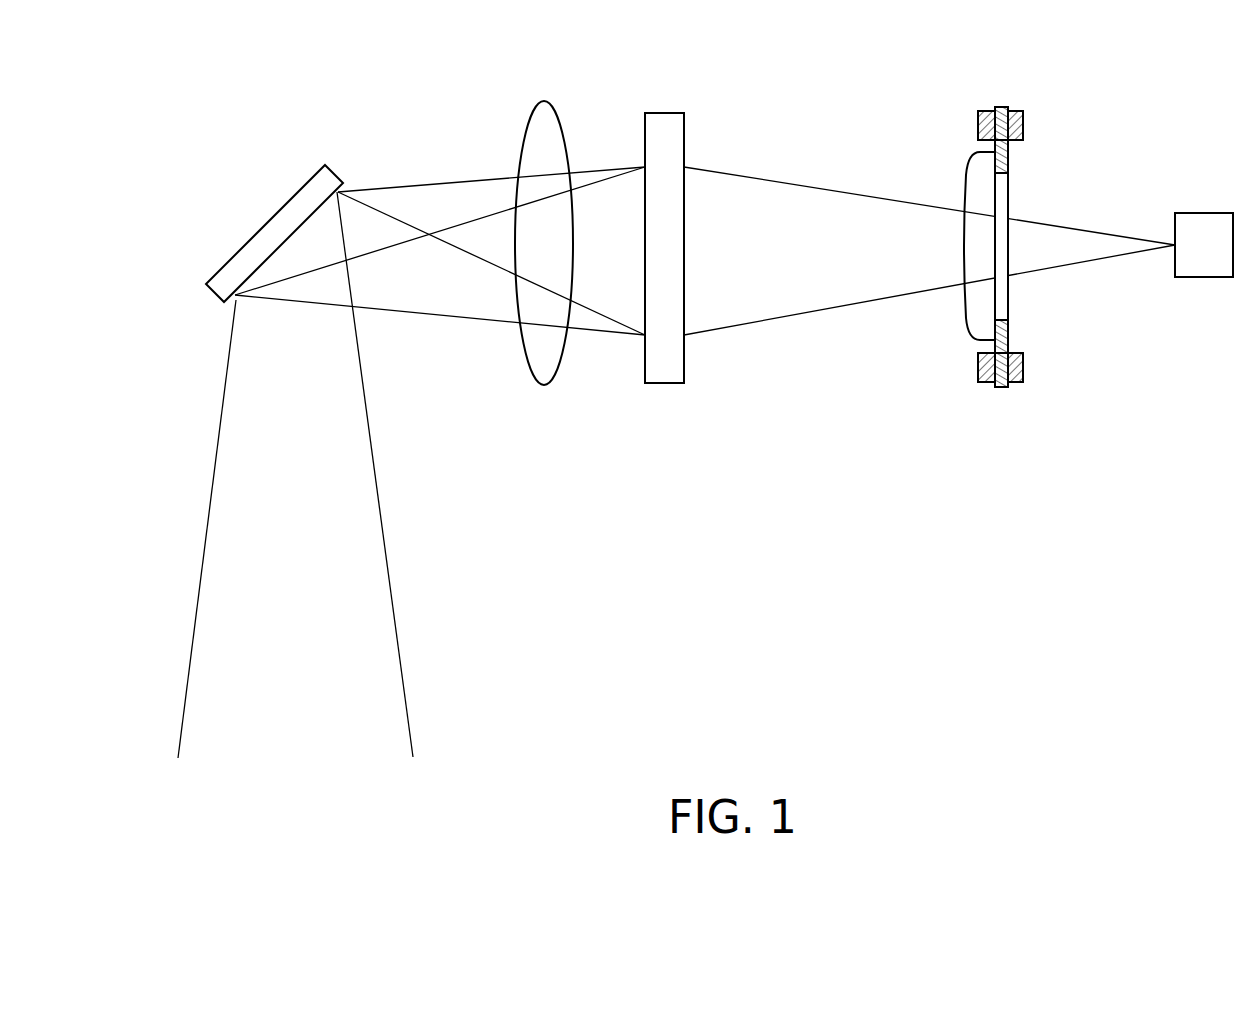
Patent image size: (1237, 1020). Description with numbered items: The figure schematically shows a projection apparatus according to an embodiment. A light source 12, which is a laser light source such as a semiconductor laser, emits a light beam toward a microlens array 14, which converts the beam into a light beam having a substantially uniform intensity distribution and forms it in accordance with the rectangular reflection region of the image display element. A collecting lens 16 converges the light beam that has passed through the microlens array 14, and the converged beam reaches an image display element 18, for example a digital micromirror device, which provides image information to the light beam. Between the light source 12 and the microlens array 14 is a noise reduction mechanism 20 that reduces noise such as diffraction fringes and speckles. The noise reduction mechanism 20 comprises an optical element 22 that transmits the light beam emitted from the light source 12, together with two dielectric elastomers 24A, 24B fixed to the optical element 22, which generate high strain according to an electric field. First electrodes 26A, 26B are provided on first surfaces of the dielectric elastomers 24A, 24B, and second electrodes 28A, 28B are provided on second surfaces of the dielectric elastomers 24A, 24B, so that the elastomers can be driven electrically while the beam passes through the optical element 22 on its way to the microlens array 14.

The light source 12 is at (1206, 212).
The microlens array 14 is at (664, 112).
The collecting lens 16 is at (538, 104).
The image display element 18 is at (319, 165).
The noise reduction mechanism 20 is at (1000, 197).
The optical element 22 is at (966, 180).
The dielectric elastomer 24A is at (1009, 160).
The dielectric elastomer 24B is at (1009, 330).
The first electrode 26A is at (1023, 125).
The first electrode 26B is at (1023, 370).
The second electrode 28A is at (978, 125).
The second electrode 28B is at (978, 370).